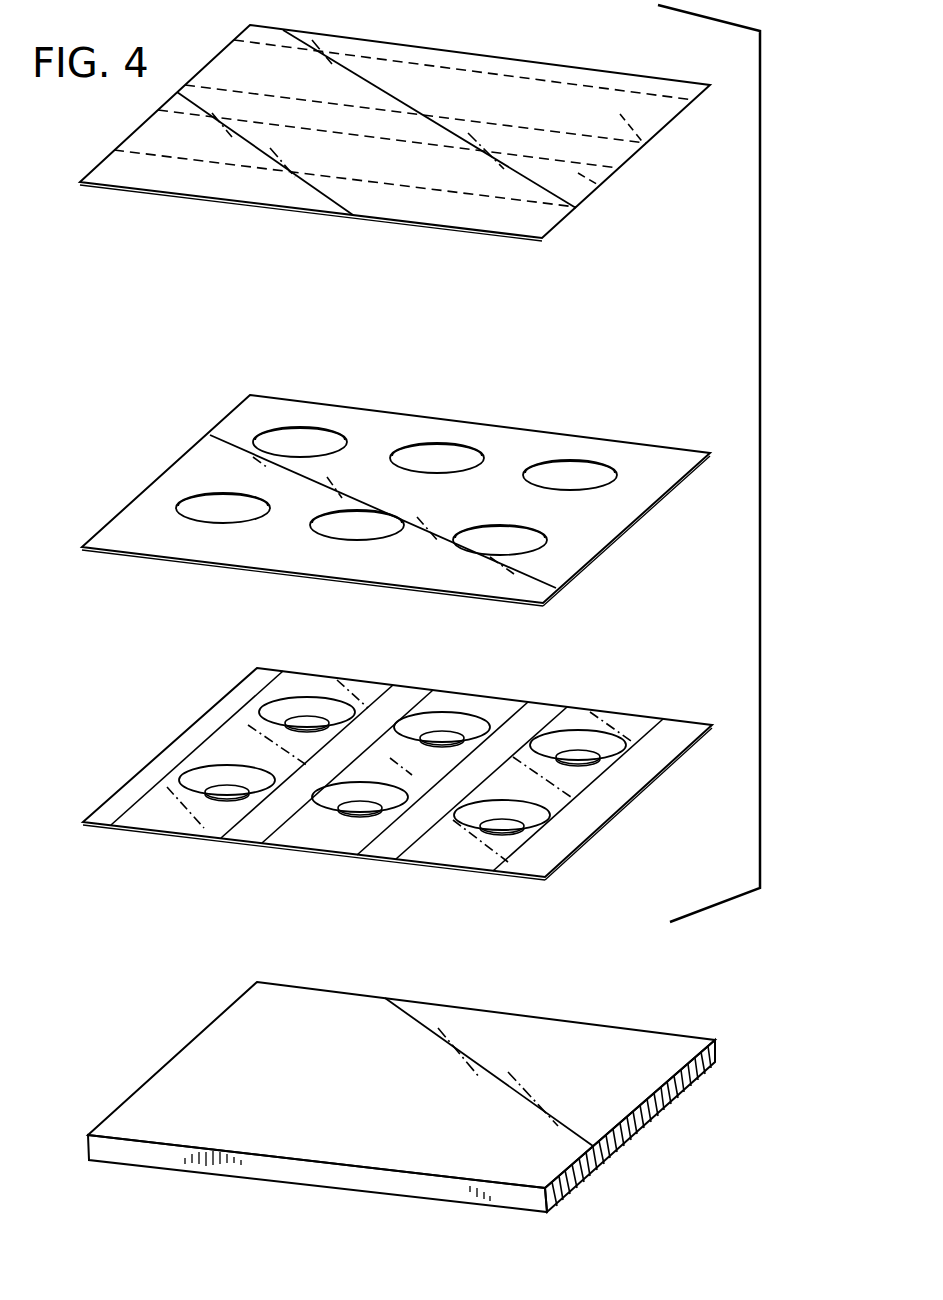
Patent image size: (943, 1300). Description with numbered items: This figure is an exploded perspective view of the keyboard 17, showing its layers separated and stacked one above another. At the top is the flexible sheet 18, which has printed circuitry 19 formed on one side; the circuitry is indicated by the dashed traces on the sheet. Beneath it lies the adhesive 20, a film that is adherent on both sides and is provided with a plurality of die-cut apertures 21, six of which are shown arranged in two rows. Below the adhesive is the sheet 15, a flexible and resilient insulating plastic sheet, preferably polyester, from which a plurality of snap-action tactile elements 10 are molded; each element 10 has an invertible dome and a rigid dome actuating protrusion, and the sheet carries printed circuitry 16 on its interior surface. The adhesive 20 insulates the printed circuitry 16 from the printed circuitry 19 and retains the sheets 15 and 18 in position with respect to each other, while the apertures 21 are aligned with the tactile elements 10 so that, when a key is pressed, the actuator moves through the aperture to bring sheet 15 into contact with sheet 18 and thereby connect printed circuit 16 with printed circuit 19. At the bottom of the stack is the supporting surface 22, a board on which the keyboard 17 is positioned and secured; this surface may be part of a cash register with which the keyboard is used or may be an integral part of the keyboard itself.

The snap-action tactile element 10 is at (273, 715).
The sheet 15 is at (670, 750).
The printed circuitry 16 is at (305, 687).
The keyboard 17 is at (760, 520).
The flexible sheet 18 is at (603, 82).
The printed circuitry 19 is at (603, 186).
The adhesive 20 is at (658, 465).
The apertures 21 is at (550, 463).
The supporting surface 22 is at (455, 1023).